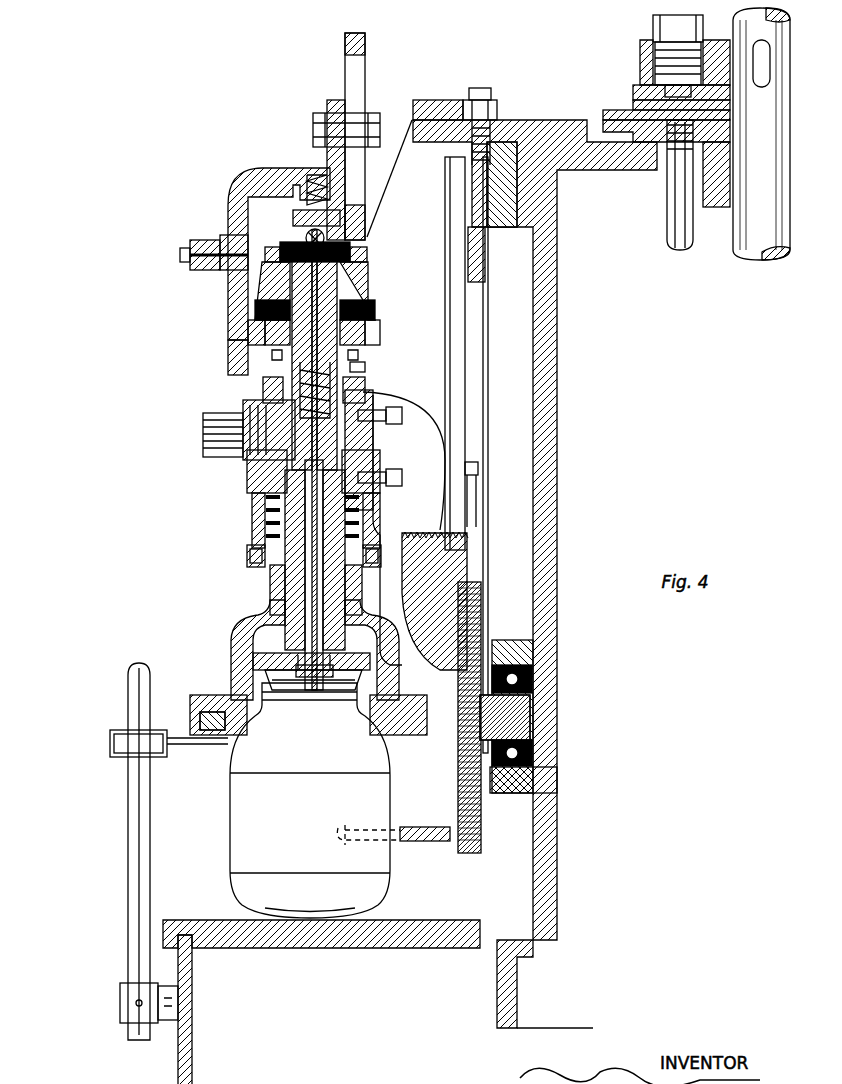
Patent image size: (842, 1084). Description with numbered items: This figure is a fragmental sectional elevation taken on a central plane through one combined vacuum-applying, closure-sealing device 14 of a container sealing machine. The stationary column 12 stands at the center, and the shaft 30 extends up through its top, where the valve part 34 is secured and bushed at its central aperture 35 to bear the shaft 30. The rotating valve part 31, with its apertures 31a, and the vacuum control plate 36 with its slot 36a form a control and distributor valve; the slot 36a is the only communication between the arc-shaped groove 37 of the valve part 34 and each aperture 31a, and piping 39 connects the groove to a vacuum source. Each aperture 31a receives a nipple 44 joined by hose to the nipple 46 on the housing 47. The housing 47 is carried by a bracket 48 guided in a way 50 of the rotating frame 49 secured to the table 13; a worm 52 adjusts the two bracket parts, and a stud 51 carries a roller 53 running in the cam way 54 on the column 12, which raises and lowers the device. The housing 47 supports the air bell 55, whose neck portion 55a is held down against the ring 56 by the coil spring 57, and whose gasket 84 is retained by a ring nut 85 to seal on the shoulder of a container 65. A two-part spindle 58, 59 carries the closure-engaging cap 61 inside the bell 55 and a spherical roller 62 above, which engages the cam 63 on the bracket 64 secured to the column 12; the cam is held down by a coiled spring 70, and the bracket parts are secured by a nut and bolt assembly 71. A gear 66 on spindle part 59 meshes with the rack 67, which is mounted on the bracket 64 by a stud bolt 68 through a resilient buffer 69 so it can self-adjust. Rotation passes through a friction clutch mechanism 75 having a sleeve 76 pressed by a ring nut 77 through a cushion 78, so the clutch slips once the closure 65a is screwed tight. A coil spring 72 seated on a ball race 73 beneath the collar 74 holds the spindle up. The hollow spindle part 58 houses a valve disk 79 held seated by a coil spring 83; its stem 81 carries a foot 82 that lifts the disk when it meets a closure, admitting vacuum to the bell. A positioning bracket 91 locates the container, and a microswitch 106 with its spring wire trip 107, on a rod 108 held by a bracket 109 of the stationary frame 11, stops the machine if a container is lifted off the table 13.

The stationary frame 11 is at (195, 1080).
The column 12 is at (556, 330).
The table 13 is at (360, 950).
The combined vacuum-applying, closure-sealing device 14 is at (252, 530).
The shaft 30 is at (745, 260).
The valve part 31 is at (640, 42).
The aperture 31a is at (665, 78).
The valve part 34 is at (603, 128).
The central aperture 35 is at (722, 210).
The vacuum control plate 36 is at (633, 100).
The slot 36a is at (640, 95).
The arc-shaped groove 37 is at (640, 115).
The piping 39 is at (667, 192).
The nipple 44 is at (653, 20).
The nipple 46 is at (203, 432).
The housing 47 is at (372, 450).
The bracket 48 is at (430, 503).
The rotating frame 49 is at (489, 338).
The way 50 is at (458, 307).
The stud 51 is at (518, 712).
The worm 52 is at (484, 598).
The roller 53 is at (522, 672).
The cam way 54 is at (518, 770).
The air bell 55 is at (240, 638).
The neck portion 55a is at (270, 585).
The ring 56 is at (365, 567).
The coil spring 57 is at (265, 506).
The lower spindle part 58 is at (248, 560).
The upper spindle part 59 is at (250, 340).
The closure-engaging cap 61 is at (365, 672).
The spherical roller 62 is at (305, 236).
The cam 63 is at (296, 218).
The bracket 64 is at (245, 178).
The container 65 is at (231, 812).
The closure 65a is at (315, 700).
The gear 66 is at (380, 340).
The rack 67 is at (230, 305).
The stud bolt 68 is at (182, 252).
The buffer 69 is at (212, 235).
The coiled spring 70 is at (315, 185).
The nut and bolt assembly 71 is at (315, 130).
The coil spring 72 is at (365, 368).
The ball race 73 is at (358, 358).
The collar 74 is at (272, 360).
The friction clutch mechanism 75 is at (360, 323).
The sleeve 76 is at (370, 305).
The ring nut 77 is at (368, 254).
The cushion 78 is at (362, 280).
The valve disk 79 is at (300, 406).
The valve stem 81 is at (308, 597).
The closure-engaging foot 82 is at (292, 672).
The coil spring 83 is at (264, 392).
The gasket 84 is at (230, 720).
The ring nut 85 is at (195, 730).
The positioning bracket 91 is at (345, 822).
The microswitch 106 is at (110, 752).
The spring wire trip 107 is at (207, 745).
The rod 108 is at (128, 890).
The bracket 109 is at (120, 1005).